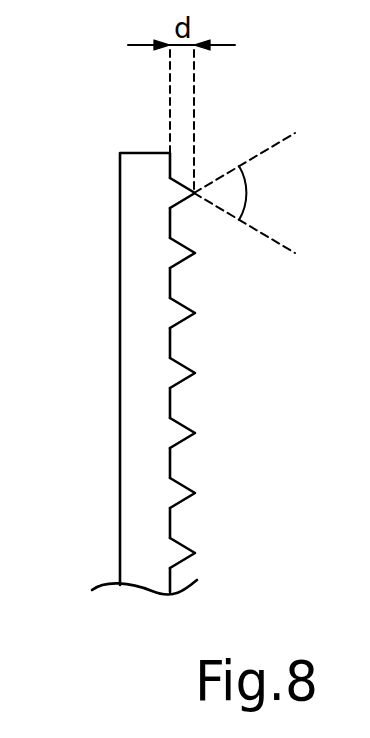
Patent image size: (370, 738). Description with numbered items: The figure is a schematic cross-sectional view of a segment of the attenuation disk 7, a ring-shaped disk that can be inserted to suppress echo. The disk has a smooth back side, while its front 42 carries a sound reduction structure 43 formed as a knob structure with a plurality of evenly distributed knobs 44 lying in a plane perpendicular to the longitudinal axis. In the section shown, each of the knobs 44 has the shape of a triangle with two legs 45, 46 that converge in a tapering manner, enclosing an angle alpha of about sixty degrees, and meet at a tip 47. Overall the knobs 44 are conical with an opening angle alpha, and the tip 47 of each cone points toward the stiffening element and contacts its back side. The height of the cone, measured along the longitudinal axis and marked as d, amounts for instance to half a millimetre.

The attenuation disk 7 is at (132, 223).
The front 42 is at (218, 400).
The sound reduction structure 43 is at (197, 483).
The knobs 44 is at (177, 308).
The leg 45 is at (180, 186).
The leg 46 is at (185, 200).
The tip 47 is at (195, 189).